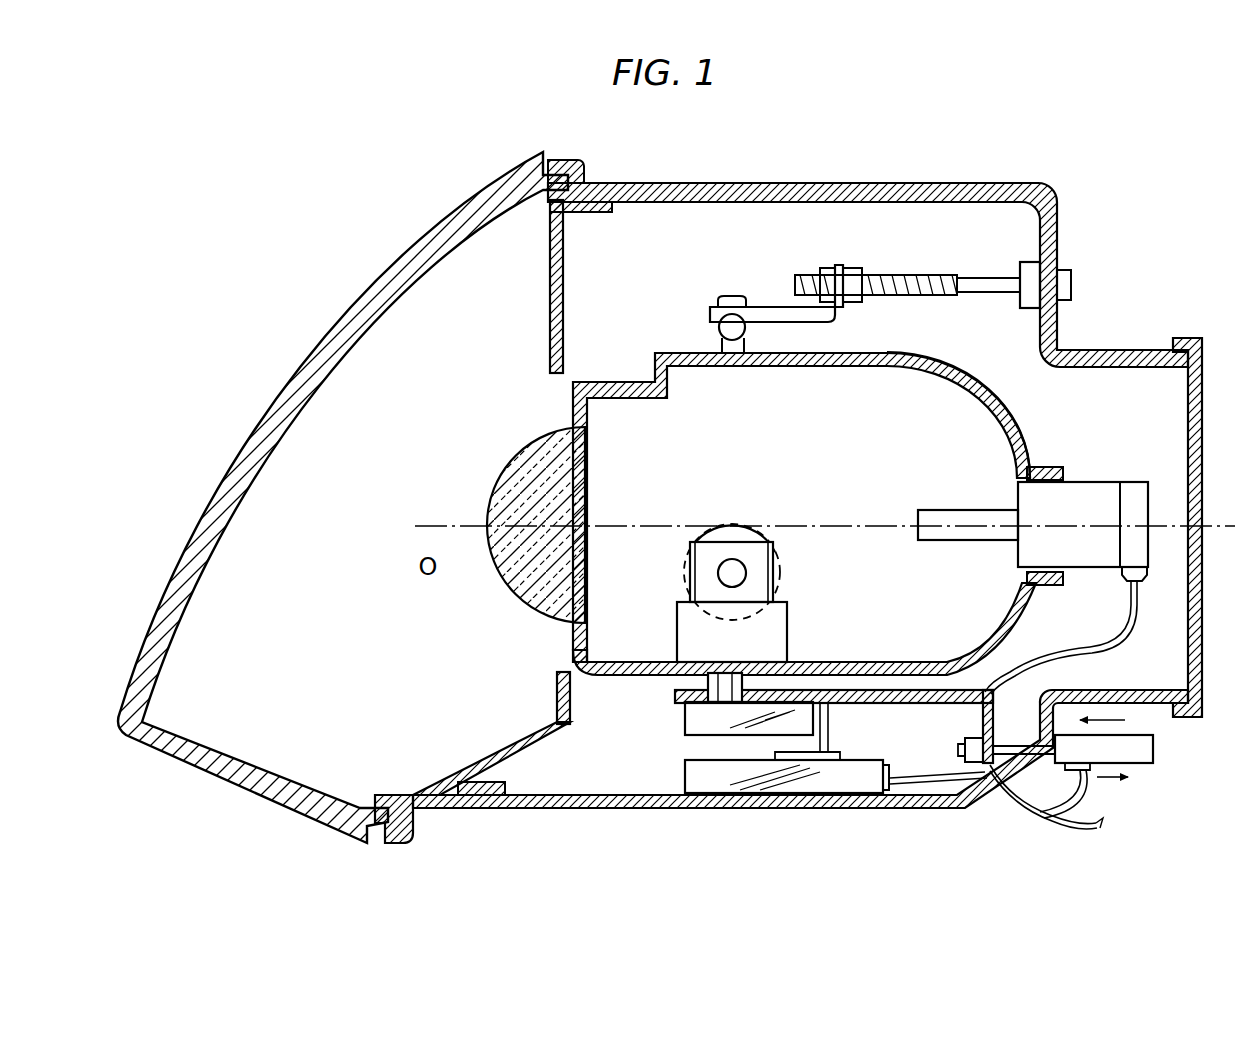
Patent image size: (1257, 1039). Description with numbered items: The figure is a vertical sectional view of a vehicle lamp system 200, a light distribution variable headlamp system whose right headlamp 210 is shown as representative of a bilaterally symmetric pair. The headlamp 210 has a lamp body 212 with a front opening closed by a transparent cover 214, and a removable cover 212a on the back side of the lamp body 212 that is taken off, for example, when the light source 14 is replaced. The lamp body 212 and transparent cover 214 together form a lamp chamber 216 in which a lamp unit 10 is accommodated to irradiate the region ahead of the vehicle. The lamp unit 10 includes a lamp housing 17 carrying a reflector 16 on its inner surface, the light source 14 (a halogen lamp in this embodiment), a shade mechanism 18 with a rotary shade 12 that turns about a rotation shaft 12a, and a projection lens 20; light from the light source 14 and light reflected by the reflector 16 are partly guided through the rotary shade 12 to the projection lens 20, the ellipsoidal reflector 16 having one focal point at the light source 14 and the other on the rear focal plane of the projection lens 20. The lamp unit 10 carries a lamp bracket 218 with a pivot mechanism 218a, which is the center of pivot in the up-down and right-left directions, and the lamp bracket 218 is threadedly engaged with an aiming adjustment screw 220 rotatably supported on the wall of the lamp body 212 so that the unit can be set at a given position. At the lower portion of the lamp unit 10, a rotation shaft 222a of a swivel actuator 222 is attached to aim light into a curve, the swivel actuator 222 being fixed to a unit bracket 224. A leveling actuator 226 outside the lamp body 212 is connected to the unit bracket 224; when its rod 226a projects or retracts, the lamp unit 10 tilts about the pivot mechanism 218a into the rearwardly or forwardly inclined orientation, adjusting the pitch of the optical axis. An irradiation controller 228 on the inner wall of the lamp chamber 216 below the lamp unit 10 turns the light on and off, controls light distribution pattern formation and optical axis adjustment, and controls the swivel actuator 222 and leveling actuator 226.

The lamp unit 10 is at (818, 497).
The rotary shade 12 is at (745, 532).
The rotation shaft 12a is at (740, 573).
The light source 14 is at (955, 513).
The reflector 16 is at (880, 368).
The lamp housing 17 is at (965, 386).
The shade mechanism 18 is at (732, 519).
The projection lens 20 is at (514, 452).
The vehicle lamp system 200 is at (494, 834).
The headlamp 210 is at (935, 182).
The lamp body 212 is at (752, 184).
The removable cover 212a is at (1182, 338).
The transparent cover 214 is at (380, 293).
The lamp chamber 216 is at (534, 286).
The lamp bracket 218 is at (780, 310).
The pivot mechanism 218a is at (719, 326).
The aiming adjustment screw 220 is at (976, 282).
The swivel actuator 222 is at (690, 720).
The rotation shaft 222a is at (710, 688).
The unit bracket 224 is at (878, 701).
The leveling actuator 226 is at (1152, 752).
The rod 226a is at (1018, 750).
The irradiation controller 228 is at (795, 794).